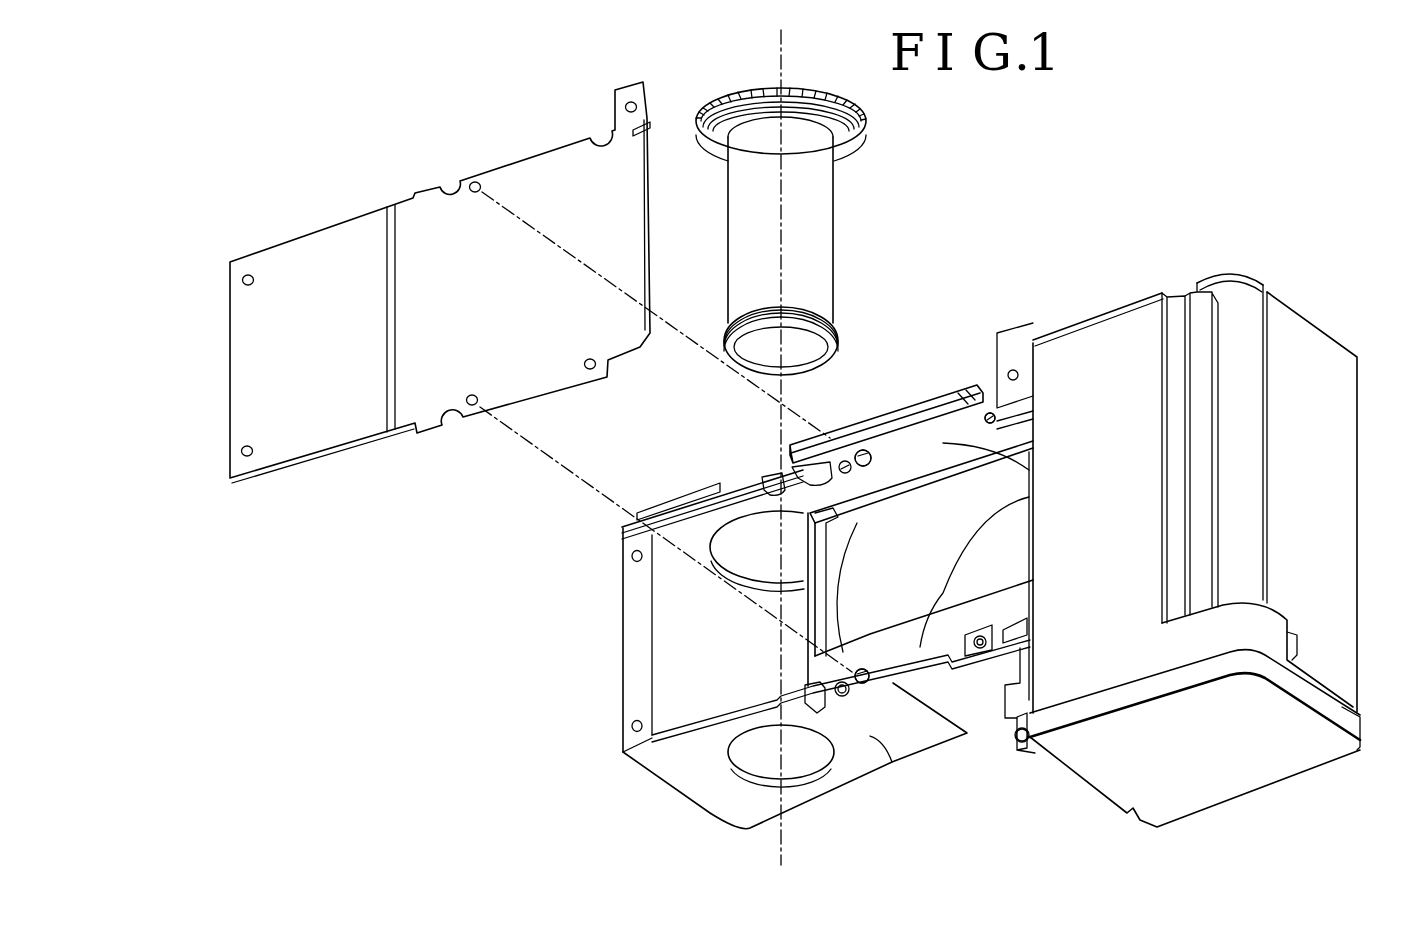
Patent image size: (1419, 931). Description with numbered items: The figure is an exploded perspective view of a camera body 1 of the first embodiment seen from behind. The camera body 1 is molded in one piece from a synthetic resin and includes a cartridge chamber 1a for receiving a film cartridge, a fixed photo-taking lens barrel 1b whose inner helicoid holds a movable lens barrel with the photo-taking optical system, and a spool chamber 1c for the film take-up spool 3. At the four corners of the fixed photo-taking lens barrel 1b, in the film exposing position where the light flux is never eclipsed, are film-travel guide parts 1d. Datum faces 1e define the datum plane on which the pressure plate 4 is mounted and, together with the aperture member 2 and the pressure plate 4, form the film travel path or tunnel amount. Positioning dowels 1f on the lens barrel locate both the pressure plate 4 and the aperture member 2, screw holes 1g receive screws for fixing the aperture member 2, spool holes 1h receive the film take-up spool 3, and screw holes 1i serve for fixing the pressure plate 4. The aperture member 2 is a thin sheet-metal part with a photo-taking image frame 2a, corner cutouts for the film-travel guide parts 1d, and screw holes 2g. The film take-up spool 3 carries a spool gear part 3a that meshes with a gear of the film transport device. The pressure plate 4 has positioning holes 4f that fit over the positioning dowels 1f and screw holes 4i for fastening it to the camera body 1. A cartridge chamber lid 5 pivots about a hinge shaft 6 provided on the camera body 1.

The camera body 1 is at (961, 566).
The cartridge chamber 1a is at (1320, 332).
The fixed photo-taking lens barrel 1b is at (997, 747).
The spool chamber 1c is at (662, 636).
The film-travel guide parts 1d is at (798, 487).
The datum faces 1e is at (1010, 406).
The positioning dowels 1f is at (850, 458).
The screw holes 1g is at (843, 456).
The spool holes 1h is at (750, 540).
The screw holes 1i is at (1013, 372).
The aperture member 2 is at (951, 623).
The photo-taking image frame 2a is at (965, 470).
The screw holes 2g is at (984, 404).
The film take-up spool 3 is at (803, 204).
The spool gear part 3a is at (809, 92).
The pressure plate 4 is at (540, 155).
The positioning holes 4f is at (472, 182).
The screw holes 4i is at (625, 104).
The cartridge chamber lid 5 is at (1297, 757).
The hinge shaft 6 is at (1018, 752).